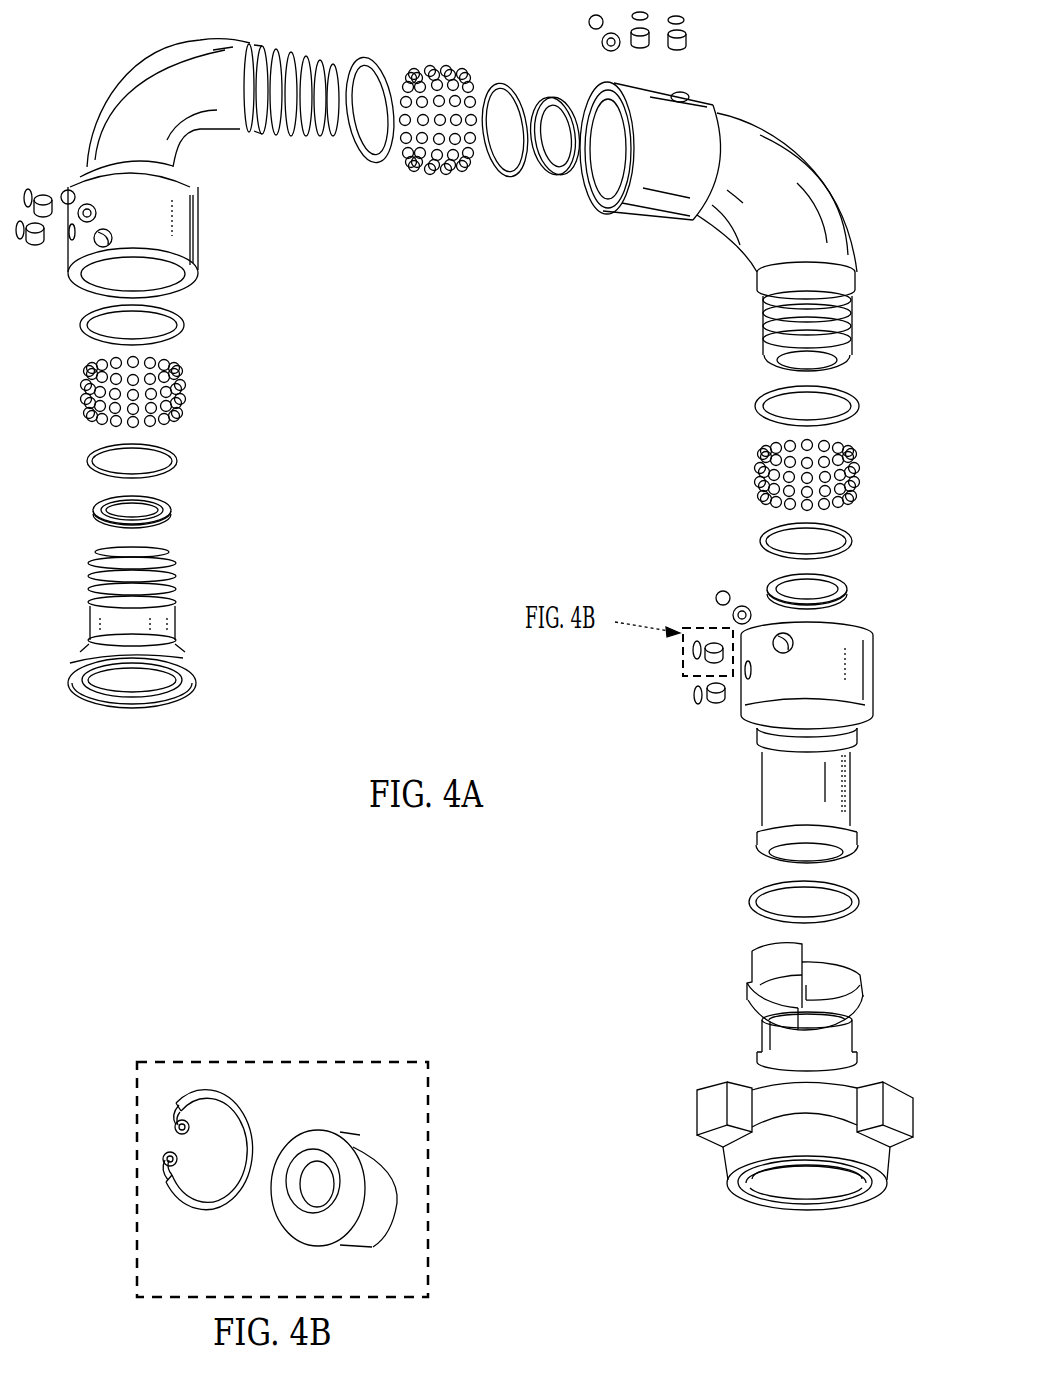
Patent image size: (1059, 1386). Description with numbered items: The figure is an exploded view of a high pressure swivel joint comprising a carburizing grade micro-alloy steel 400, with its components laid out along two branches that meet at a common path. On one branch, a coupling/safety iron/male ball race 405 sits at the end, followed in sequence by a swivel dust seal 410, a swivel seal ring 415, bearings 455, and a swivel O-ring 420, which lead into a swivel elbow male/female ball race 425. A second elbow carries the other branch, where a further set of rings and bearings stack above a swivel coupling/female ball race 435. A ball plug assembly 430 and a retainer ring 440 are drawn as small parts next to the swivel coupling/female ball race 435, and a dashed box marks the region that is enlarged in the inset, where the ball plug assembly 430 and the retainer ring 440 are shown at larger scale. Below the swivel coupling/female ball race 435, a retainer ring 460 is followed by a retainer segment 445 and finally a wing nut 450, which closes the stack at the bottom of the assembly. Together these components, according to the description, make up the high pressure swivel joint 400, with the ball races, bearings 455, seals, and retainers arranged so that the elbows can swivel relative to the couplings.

In FIG. 4A, the high pressure swivel joint comprising a carburizing grade micro-alloy steel 400 is at (422, 440).
In FIG. 4A, the coupling/safety iron/male ball race 405 is at (196, 678).
In FIG. 4A, the swivel dust seal 410 is at (98, 520).
In FIG. 4A, the swivel seal ring 415 is at (90, 468).
In FIG. 4A, the swivel O-ring 420 is at (84, 330).
In FIG. 4A, the swivel elbow male/female ball race 425 is at (200, 234).
In FIG. 4A, the ball plug assembly 430 is at (712, 643).
In FIG. 4B, the ball plug assembly 430 is at (323, 1130).
In FIG. 4A, the swivel coupling/female ball race 435 is at (852, 790).
In FIG. 4A, the retainer ring 440 is at (693, 649).
In FIG. 4B, the retainer ring 440 is at (197, 1210).
In FIG. 4A, the retainer segment 445 is at (742, 1019).
In FIG. 4A, the wing nut 450 is at (805, 1213).
In FIG. 4A, the bearings 455 is at (200, 388).
In FIG. 4A, the retainer ring 460 is at (748, 898).